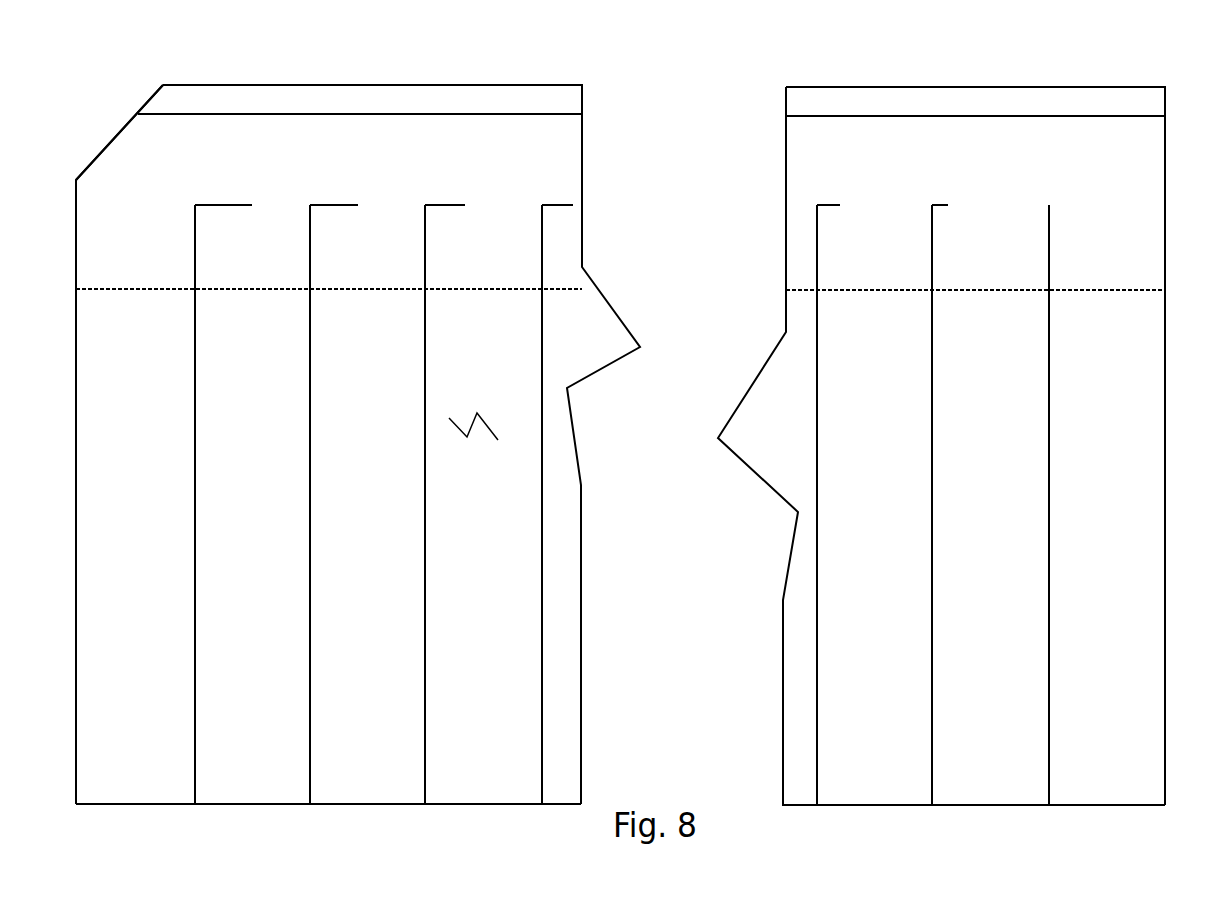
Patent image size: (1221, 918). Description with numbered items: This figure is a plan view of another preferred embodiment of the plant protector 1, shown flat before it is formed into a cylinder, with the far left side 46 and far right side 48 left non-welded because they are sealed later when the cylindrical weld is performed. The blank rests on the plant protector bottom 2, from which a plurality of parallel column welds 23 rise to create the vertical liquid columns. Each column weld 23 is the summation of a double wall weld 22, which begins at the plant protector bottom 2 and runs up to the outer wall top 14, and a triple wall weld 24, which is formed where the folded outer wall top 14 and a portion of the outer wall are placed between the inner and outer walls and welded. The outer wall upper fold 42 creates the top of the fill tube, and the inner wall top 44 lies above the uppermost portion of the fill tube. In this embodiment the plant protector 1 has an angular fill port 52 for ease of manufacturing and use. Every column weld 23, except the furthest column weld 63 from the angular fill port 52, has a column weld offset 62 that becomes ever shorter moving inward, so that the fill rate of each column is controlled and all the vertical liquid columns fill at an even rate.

The plant protector 1 is at (469, 422).
The plant protector bottom 2 is at (333, 804).
The outer wall top 14 is at (363, 289).
The double wall weld 22 is at (195, 443).
The column weld 23 is at (310, 423).
The triple wall weld 24 is at (195, 250).
The outer wall upper fold 42 is at (453, 114).
The inner wall top 44 is at (905, 87).
The far left side 46 is at (76, 423).
The far right side 48 is at (1162, 500).
The angular fill port 52 is at (123, 132).
The column weld offset 62 is at (453, 205).
The furthest column weld 63 is at (1049, 327).